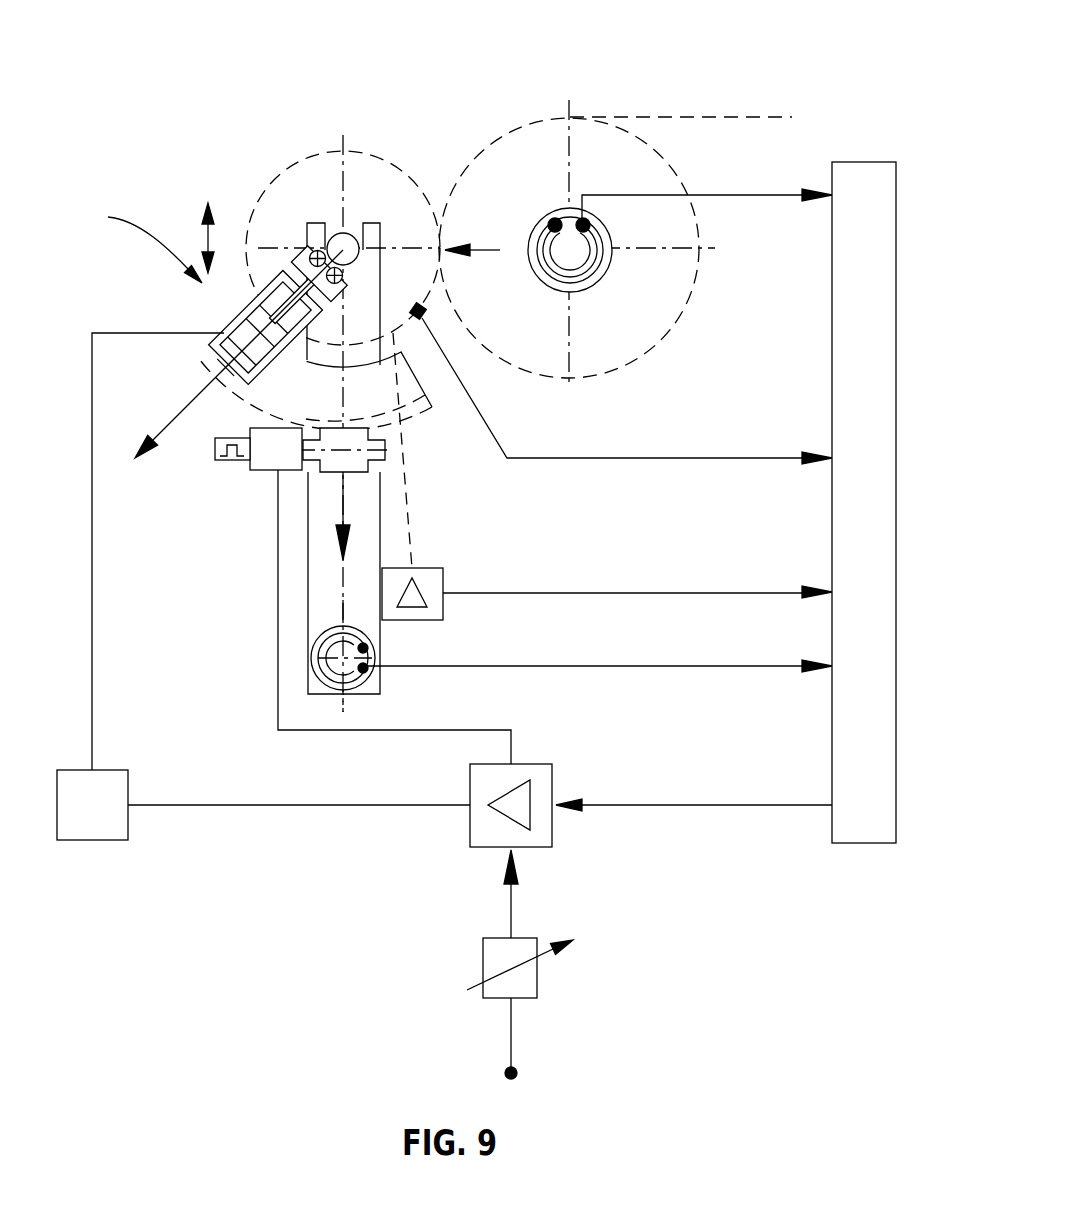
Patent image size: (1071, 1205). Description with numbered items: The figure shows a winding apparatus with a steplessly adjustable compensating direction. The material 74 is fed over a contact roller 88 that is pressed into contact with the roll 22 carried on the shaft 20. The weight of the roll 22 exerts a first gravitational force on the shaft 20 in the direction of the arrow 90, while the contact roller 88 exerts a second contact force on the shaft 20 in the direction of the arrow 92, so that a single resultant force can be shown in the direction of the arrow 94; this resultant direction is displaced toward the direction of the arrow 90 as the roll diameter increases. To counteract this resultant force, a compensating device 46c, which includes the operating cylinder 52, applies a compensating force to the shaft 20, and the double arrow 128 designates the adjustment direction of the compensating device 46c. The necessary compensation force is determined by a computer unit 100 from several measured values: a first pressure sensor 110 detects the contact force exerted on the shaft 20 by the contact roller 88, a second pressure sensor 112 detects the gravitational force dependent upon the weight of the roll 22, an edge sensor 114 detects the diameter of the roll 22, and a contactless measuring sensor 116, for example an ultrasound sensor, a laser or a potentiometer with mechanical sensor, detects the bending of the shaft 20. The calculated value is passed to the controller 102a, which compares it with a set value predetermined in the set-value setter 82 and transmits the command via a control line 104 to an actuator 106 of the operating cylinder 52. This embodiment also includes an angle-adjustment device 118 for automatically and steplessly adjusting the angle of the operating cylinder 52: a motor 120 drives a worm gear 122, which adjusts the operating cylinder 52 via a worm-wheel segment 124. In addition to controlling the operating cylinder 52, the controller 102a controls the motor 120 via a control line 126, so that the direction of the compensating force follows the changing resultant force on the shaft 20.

The shaft 20 is at (345, 247).
The roll 22 is at (280, 177).
The compensating device 46c is at (127, 238).
The operating cylinder 52 is at (250, 303).
The material 74 is at (716, 117).
The set-value setter 82 is at (537, 983).
The contact roller 88 is at (637, 367).
The arrow 90 is at (347, 497).
The arrow 92 is at (500, 255).
The arrow 94 is at (185, 408).
The computer unit 100 is at (857, 845).
The controller 102a is at (537, 764).
The control line 104 is at (305, 805).
The actuator 106 is at (118, 770).
The first pressure sensor 110 is at (600, 280).
The second pressure sensor 112 is at (367, 683).
The edge sensor 114 is at (425, 316).
The contactless measuring sensor 116 is at (443, 580).
The angle-adjustment device 118 is at (214, 483).
The motor 120 is at (262, 470).
The worm gear 122 is at (360, 472).
The worm-wheel segment 124 is at (412, 420).
The control line 126 is at (300, 640).
The double arrow 128 is at (205, 233).